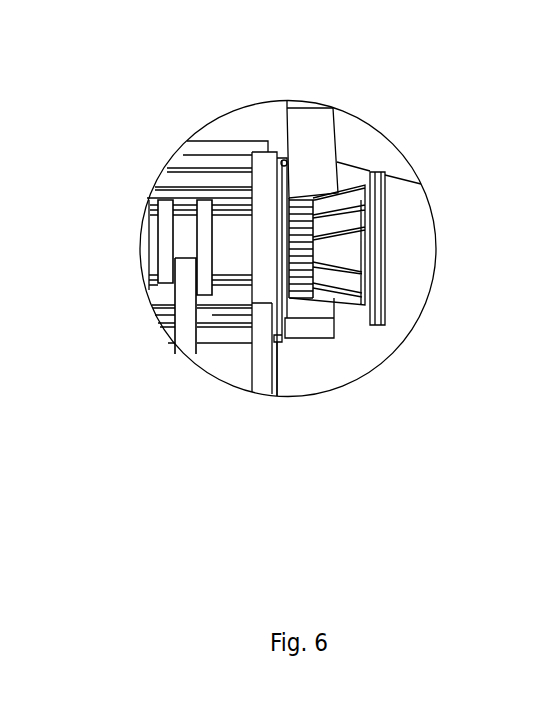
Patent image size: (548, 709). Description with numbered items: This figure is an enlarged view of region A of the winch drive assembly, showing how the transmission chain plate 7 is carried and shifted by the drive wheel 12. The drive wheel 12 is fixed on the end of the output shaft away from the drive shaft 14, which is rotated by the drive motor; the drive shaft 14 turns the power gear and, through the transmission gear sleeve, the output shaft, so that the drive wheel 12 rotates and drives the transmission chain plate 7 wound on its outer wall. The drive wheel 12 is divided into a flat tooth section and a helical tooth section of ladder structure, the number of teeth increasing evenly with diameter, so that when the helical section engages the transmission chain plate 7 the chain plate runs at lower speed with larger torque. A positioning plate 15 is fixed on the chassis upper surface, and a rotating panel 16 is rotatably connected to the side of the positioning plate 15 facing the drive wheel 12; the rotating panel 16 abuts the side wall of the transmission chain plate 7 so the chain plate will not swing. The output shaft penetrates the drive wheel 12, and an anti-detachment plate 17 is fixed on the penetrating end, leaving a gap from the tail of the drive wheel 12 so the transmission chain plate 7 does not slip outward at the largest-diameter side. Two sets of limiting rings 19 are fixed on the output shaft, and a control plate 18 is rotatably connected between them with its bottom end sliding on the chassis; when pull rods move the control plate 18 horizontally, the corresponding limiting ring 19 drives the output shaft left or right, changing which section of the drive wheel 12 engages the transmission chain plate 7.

The enlarged region A is at (381, 135).
The transmission chain plate 7 is at (310, 147).
The drive wheel 12 is at (333, 240).
The drive shaft 14 is at (229, 240).
The positioning plate 15 is at (263, 303).
The rotating panel 16 is at (281, 280).
The anti-detachment plate 17 is at (385, 220).
The control plate 18 is at (181, 283).
The limiting rings 19 is at (167, 232).